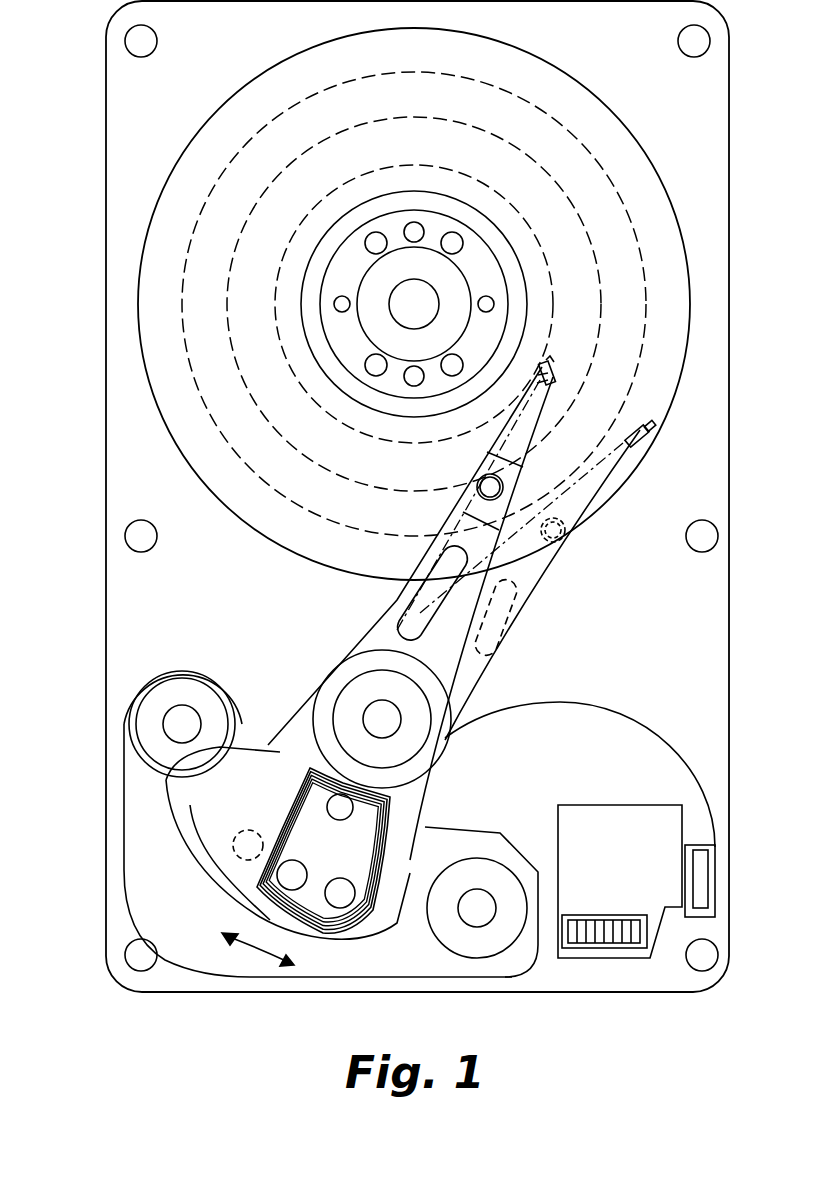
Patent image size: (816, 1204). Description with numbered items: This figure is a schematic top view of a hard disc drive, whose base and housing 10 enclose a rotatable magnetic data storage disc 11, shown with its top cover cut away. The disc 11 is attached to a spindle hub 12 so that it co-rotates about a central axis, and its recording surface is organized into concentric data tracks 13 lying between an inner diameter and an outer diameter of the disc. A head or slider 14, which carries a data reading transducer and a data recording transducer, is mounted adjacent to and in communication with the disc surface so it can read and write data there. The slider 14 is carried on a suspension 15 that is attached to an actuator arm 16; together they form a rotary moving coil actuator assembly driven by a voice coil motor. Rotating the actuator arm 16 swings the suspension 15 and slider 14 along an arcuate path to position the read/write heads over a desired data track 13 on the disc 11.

The disk drive base/housing 10 is at (125, 412).
The magnetic disk 11 is at (162, 190).
The spindle hub 12 is at (360, 328).
The data tracks 13 is at (228, 266).
The read/write head slider 14 is at (555, 368).
The suspension / load beam 15 is at (523, 430).
The actuator arm 16 is at (390, 617).